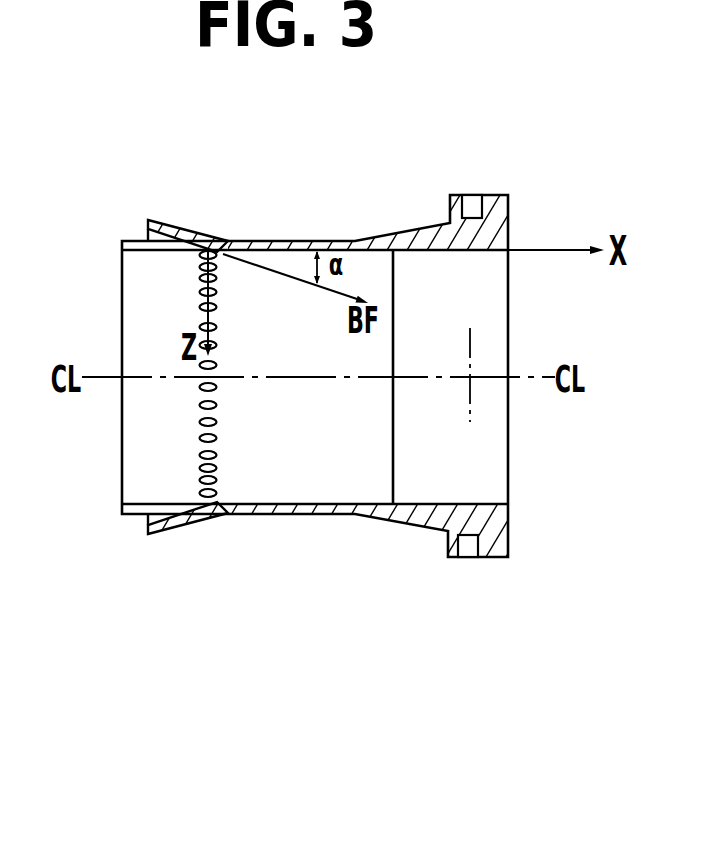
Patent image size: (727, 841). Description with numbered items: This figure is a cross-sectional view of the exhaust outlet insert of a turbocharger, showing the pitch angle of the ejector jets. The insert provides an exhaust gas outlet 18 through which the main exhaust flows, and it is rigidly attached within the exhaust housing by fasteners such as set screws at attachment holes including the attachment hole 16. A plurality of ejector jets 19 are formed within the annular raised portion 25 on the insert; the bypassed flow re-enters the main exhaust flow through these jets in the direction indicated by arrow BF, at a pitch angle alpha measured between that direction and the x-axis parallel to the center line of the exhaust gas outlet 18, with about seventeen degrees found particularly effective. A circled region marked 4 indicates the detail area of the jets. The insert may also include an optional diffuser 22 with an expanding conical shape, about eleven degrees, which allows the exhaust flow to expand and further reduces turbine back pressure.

The detail view circle (FIG. 4 region) 4 is at (180, 136).
The attachment hole 16 is at (475, 193).
The exhaust gas outlet 18 is at (485, 320).
The ejector jets 19 is at (213, 483).
The diffuser 22 is at (462, 510).
The annular raised portion 25 is at (168, 535).